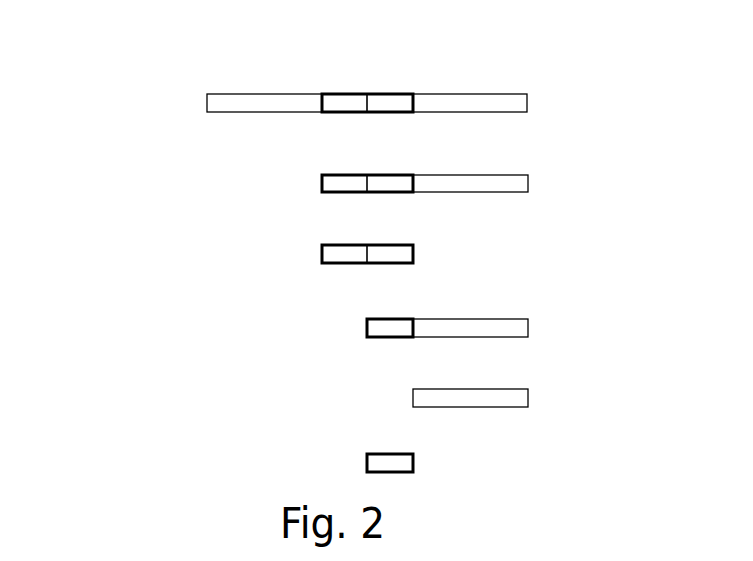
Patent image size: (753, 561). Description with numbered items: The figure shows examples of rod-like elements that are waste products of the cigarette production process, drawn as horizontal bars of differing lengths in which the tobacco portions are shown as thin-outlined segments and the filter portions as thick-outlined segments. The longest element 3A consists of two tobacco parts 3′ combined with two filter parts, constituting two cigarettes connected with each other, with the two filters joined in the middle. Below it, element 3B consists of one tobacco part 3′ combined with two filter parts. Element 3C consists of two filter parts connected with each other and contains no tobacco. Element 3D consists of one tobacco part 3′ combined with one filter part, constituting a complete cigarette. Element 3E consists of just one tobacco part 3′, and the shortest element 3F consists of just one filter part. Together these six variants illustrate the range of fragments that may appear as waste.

The rod-like waste element 3A is at (183, 115).
The rod-like waste element 3B is at (548, 164).
The rod-like waste element 3C is at (308, 267).
The rod-like waste element 3D is at (548, 310).
The rod-like waste element 3E is at (552, 403).
The rod-like waste element 3F is at (425, 477).
The tobacco part 3′ is at (252, 103).